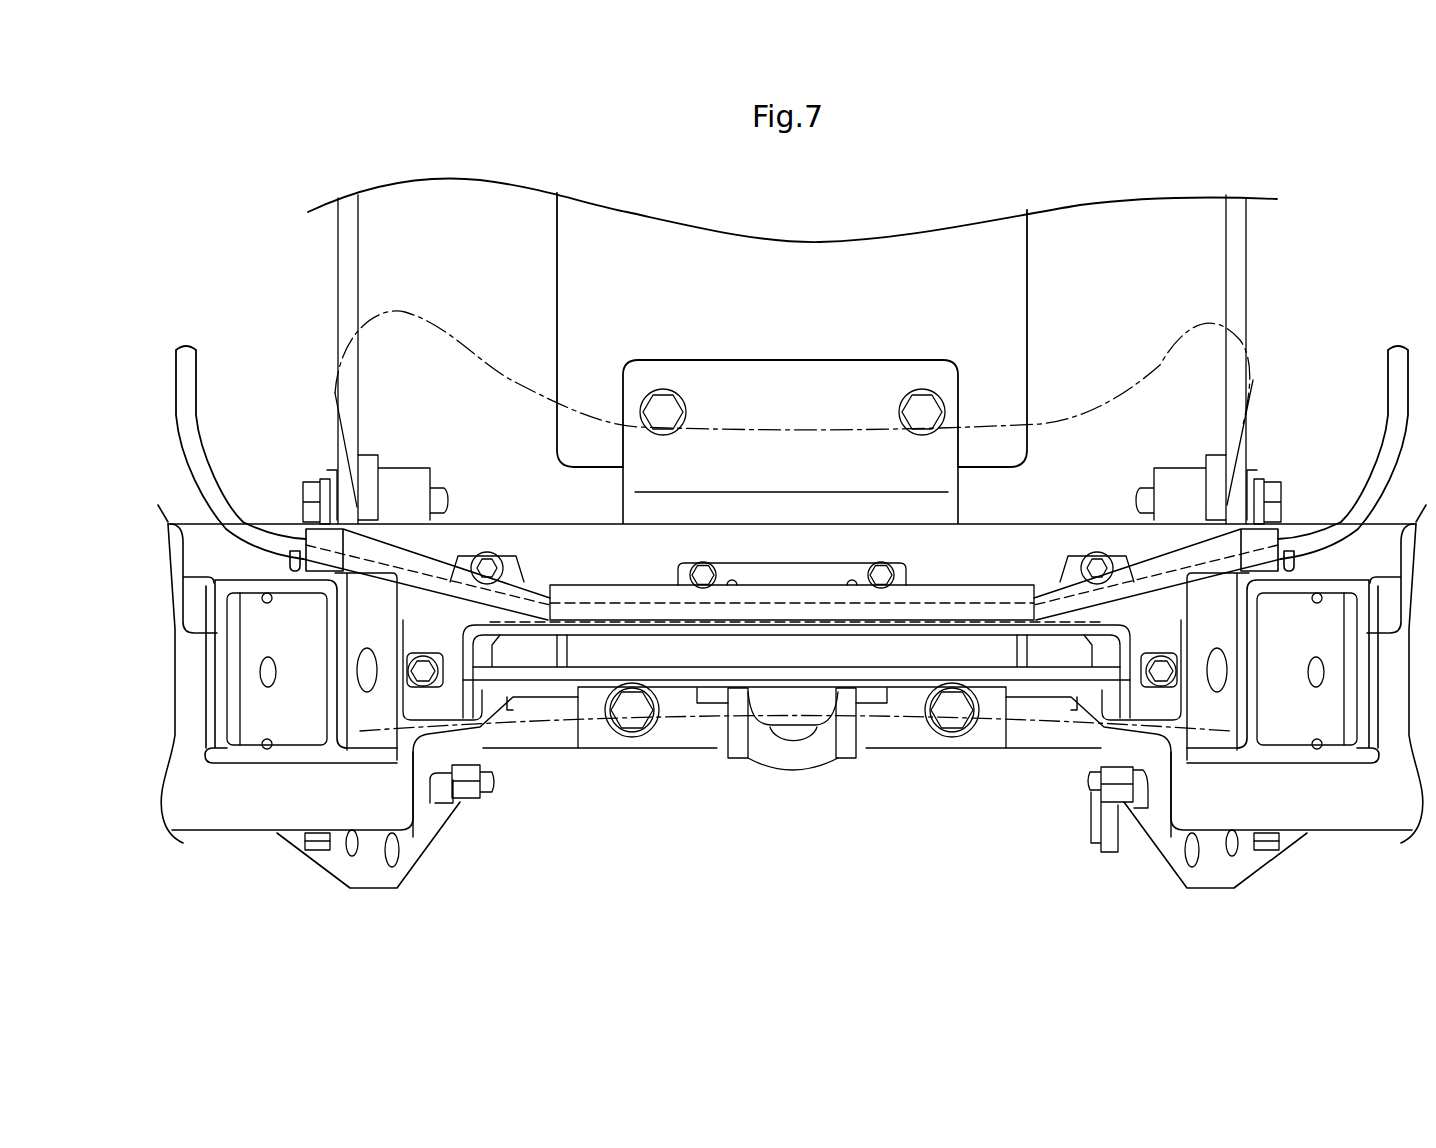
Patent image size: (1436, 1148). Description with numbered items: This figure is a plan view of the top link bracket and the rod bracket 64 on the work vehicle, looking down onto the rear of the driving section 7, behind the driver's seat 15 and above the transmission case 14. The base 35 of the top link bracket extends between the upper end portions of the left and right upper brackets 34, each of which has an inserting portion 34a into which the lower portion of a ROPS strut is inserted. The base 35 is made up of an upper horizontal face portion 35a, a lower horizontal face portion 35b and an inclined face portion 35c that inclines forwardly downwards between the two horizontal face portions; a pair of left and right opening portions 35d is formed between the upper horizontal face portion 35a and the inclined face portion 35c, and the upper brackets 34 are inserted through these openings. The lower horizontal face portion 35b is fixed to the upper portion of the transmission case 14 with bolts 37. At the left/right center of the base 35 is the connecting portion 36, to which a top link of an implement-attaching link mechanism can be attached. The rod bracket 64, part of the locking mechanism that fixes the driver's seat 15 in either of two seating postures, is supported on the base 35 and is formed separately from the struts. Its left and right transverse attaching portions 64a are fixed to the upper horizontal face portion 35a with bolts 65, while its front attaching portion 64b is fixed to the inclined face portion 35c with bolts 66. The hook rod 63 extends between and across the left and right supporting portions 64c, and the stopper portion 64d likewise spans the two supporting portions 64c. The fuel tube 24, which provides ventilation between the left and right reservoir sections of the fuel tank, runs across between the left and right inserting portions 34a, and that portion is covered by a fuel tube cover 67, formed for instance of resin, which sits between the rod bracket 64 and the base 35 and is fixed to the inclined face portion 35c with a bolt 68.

The driving section 7 is at (284, 147).
The transmission case 14 is at (797, 255).
The driver's seat 15 is at (487, 368).
The fuel tube 24 is at (1372, 488).
The upper bracket 34 is at (1157, 838).
The inserting portion 34a is at (1325, 728).
The base 35 is at (248, 833).
The upper horizontal face portion 35a is at (407, 825).
The lower horizontal face portion 35b is at (802, 383).
The inclined face portion 35c is at (630, 543).
The opening portion 35d is at (1280, 730).
The connecting portion 36 is at (847, 730).
The bolt 37 is at (924, 400).
The hook rod 63 is at (902, 678).
The rod bracket 64 is at (968, 615).
The transverse attaching portion 64a is at (1168, 700).
The front attaching portion 64b is at (795, 570).
The supporting portion 64c is at (1128, 660).
The stopper portion 64d is at (667, 618).
The bolt 65 is at (1168, 673).
The bolt 66 is at (881, 562).
The fuel tube cover 67 is at (763, 593).
The bolt 68 is at (1090, 562).